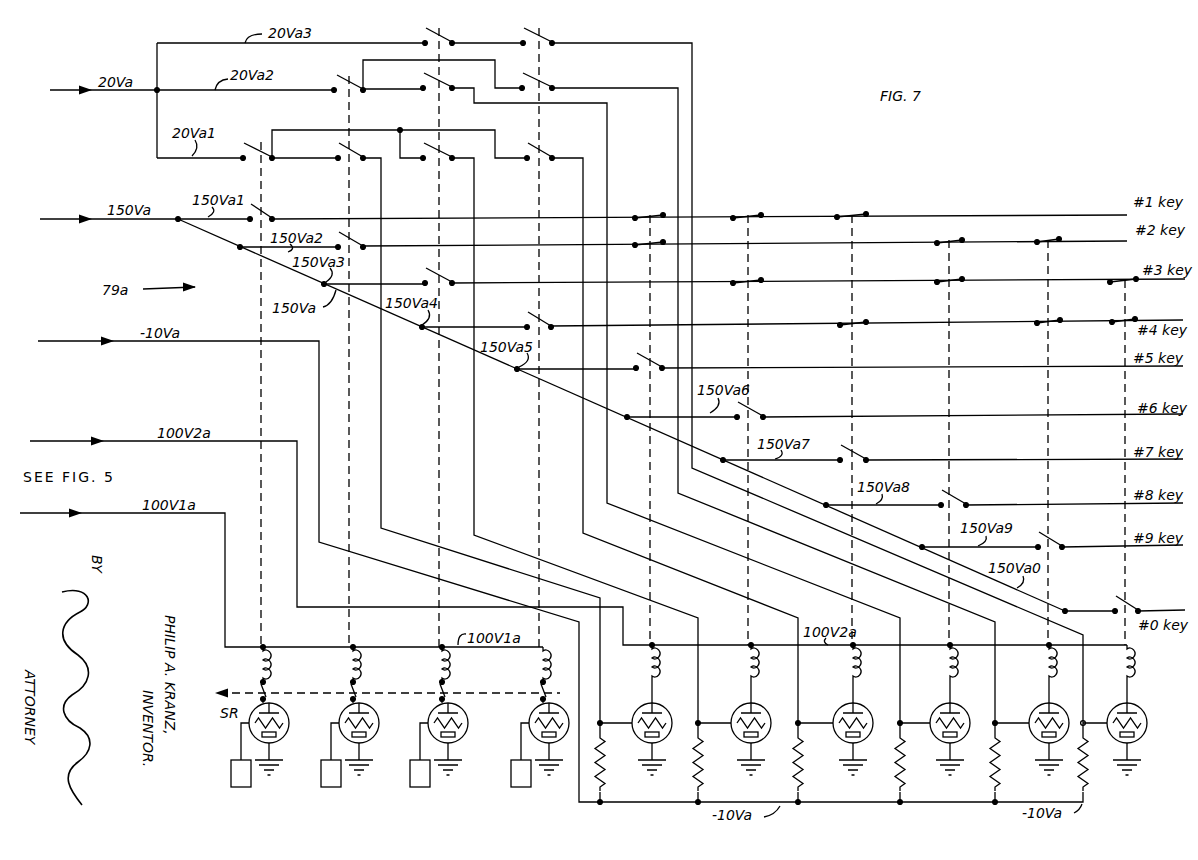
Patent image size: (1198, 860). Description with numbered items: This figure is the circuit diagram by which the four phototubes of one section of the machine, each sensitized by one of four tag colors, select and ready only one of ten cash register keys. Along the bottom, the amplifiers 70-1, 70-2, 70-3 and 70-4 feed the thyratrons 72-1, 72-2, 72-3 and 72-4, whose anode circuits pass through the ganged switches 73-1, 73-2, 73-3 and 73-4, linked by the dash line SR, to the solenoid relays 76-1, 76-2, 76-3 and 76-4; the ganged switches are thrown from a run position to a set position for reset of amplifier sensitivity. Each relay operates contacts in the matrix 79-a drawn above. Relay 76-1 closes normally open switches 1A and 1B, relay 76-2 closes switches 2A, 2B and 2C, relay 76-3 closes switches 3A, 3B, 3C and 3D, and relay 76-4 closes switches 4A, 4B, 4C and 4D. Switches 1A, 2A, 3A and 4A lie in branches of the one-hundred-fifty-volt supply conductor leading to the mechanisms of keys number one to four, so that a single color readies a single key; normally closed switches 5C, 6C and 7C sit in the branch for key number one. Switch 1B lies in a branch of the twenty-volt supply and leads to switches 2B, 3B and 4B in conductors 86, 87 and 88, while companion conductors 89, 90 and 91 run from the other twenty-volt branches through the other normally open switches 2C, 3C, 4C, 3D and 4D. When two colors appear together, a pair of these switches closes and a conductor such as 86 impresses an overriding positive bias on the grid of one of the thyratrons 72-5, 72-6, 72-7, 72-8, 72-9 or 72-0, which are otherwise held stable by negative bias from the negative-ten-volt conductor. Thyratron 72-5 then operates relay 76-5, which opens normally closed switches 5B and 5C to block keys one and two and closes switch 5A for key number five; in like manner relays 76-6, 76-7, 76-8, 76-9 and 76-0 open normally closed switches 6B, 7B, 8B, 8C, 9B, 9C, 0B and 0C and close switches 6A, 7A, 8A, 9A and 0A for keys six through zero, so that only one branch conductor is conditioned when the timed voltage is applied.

The amplifier 70-1 is at (243, 787).
The amplifier 70-2 is at (333, 787).
The amplifier 70-3 is at (422, 787).
The amplifier 70-4 is at (523, 787).
The thyratron 72-1 is at (283, 711).
The thyratron 72-2 is at (373, 709).
The thyratron 72-3 is at (463, 709).
The thyratron 72-4 is at (552, 707).
The thyratron 72-5 is at (664, 701).
The thyratron tube 6 72-6 is at (764, 702).
The thyratron tube 7 72-7 is at (864, 700).
The thyratron tube 8 72-8 is at (962, 700).
The thyratron tube 9 72-9 is at (1063, 709).
The thyratron tube 0 72-0 is at (1142, 709).
The switch 73-1 is at (268, 689).
The switch 73-2 is at (358, 689).
The switch 73-3 is at (447, 688).
The switch 73-4 is at (548, 688).
The solenoid relay 76-1 is at (258, 662).
The solenoid relay 76-2 is at (348, 661).
The solenoid relay 76-3 is at (437, 660).
The solenoid relay 76-4 is at (541, 658).
The solenoid relay 76-5 is at (657, 677).
The relay coil 6 76-6 is at (757, 677).
The relay coil 7 76-7 is at (859, 677).
The relay coil 8 76-8 is at (956, 677).
The relay coil 9 76-9 is at (1055, 677).
The relay coil 0 76-0 is at (1134, 664).
The matrix 79-a is at (720, 115).
The conductor 86 is at (297, 158).
The conductor 87 is at (366, 130).
The conductor 88 is at (480, 130).
The conductor 89 is at (403, 88).
The conductor 90 is at (372, 66).
The conductor 91 is at (692, 76).
The normally open switch 1A is at (267, 210).
The normally open switch 1B is at (258, 143).
The normally open switch 2A is at (354, 237).
The normally open switch 2B is at (358, 147).
The relay contact 2C is at (347, 76).
The normally open switch 3A is at (442, 274).
The normally open switch 3B is at (446, 149).
The relay contact 3C is at (443, 78).
The relay contact 3D is at (450, 35).
The normally open switch 4A is at (545, 315).
The normally open switch 4B is at (551, 147).
The relay contact 4C is at (545, 78).
The relay contact 4D is at (549, 35).
The normally open switch 5A is at (653, 358).
The normally closed switch 5B is at (653, 235).
The normally closed switch 5C is at (651, 207).
The normally open switch 6A is at (755, 409).
The key contact 6B is at (753, 272).
The normally closed switch 6C is at (747, 207).
The normally open switch 7A is at (858, 452).
The key contact 7B is at (859, 314).
The normally closed switch 7C is at (852, 204).
The normally open switch 8A is at (960, 493).
The key contact 8B is at (958, 270).
The key contact 8C is at (961, 232).
The normally open switch 9A is at (1059, 537).
The key contact 9B is at (1055, 312).
The key contact 9C is at (1058, 232).
The normally open switch 0A is at (1134, 600).
The key contact 0B is at (1129, 312).
The key contact 0C is at (1125, 269).